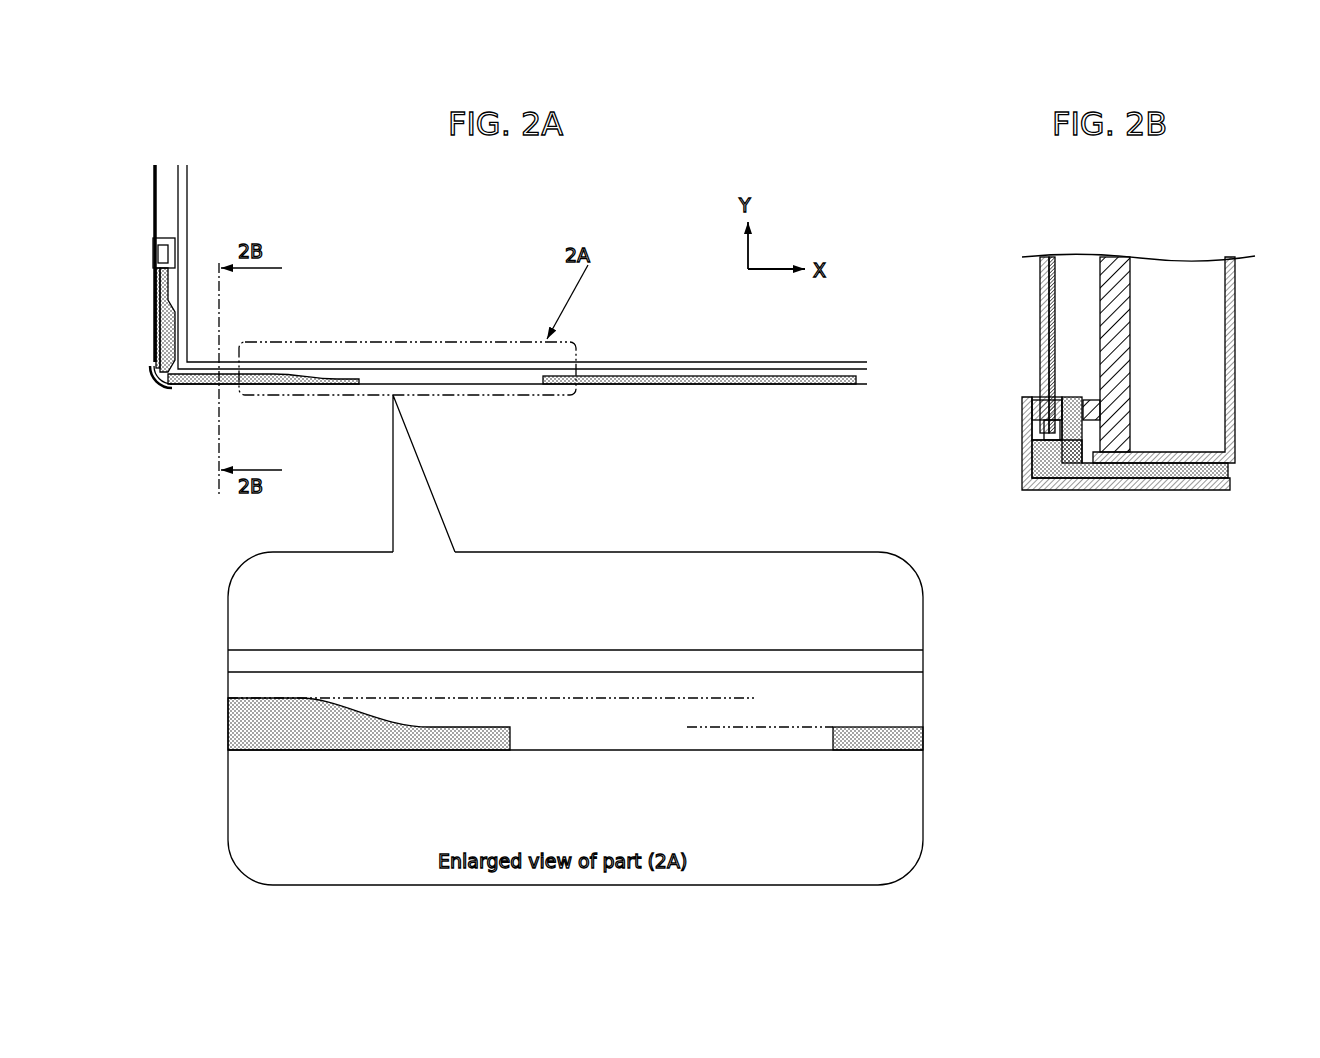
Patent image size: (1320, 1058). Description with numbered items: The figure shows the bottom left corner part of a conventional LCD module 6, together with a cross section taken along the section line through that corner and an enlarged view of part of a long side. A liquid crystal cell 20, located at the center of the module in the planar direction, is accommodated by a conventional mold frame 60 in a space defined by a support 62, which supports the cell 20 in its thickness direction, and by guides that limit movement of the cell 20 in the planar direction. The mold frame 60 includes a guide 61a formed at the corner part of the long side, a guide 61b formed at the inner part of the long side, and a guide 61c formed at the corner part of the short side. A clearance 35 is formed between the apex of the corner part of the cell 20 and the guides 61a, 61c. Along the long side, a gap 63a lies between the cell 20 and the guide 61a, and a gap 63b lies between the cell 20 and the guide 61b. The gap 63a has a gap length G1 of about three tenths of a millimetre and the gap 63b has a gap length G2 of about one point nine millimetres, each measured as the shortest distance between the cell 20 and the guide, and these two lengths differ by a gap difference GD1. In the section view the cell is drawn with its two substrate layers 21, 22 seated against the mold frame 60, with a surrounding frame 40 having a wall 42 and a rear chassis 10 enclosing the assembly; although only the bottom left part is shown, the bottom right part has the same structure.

In FIG. 2A, the conventional LCD module 6 is at (135, 206).
In FIG. 2B, the rear frame / back chassis 10 is at (1192, 482).
In FIG. 2A, the liquid crystal cell 20 is at (780, 434).
In FIG. 2A, the first substrate 21 is at (668, 363).
In FIG. 2B, the first substrate 21 is at (1055, 263).
In FIG. 2A, the second substrate 22 is at (722, 348).
In FIG. 2B, the second substrate 22 is at (1038, 257).
In FIG. 2A, the clearance 35 is at (165, 387).
In FIG. 2B, the frame 40 is at (1230, 397).
In FIG. 2B, the frame wall 42 is at (1113, 272).
In FIG. 2B, the mold frame 60 is at (1137, 535).
In FIG. 2A, the guide 61a is at (262, 381).
In FIG. 2B, the guide 61a is at (1048, 462).
In FIG. 2A, the guide 61b is at (583, 378).
In FIG. 2A, the guide 61c is at (165, 337).
In FIG. 2A, the support 62 is at (422, 377).
In FIG. 2B, the support 62 is at (1075, 420).
In FIG. 2A, the gap 63a is at (249, 365).
In FIG. 2B, the gap 63a is at (1045, 440).
In FIG. 2A, the gap 63b is at (599, 364).
In FIG. 2A, the gap length G1 is at (572, 600).
In FIG. 2A, the gap difference GD1 is at (713, 625).
In FIG. 2A, the gap length G2 is at (852, 672).